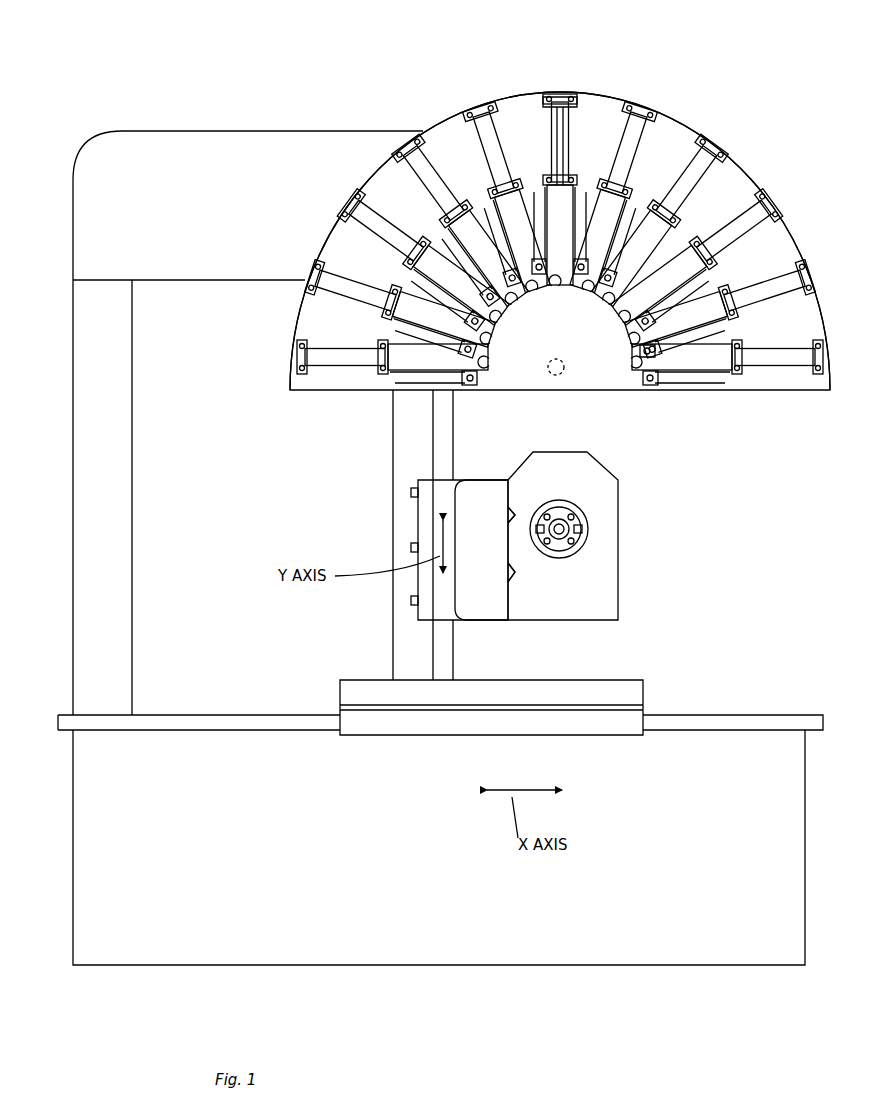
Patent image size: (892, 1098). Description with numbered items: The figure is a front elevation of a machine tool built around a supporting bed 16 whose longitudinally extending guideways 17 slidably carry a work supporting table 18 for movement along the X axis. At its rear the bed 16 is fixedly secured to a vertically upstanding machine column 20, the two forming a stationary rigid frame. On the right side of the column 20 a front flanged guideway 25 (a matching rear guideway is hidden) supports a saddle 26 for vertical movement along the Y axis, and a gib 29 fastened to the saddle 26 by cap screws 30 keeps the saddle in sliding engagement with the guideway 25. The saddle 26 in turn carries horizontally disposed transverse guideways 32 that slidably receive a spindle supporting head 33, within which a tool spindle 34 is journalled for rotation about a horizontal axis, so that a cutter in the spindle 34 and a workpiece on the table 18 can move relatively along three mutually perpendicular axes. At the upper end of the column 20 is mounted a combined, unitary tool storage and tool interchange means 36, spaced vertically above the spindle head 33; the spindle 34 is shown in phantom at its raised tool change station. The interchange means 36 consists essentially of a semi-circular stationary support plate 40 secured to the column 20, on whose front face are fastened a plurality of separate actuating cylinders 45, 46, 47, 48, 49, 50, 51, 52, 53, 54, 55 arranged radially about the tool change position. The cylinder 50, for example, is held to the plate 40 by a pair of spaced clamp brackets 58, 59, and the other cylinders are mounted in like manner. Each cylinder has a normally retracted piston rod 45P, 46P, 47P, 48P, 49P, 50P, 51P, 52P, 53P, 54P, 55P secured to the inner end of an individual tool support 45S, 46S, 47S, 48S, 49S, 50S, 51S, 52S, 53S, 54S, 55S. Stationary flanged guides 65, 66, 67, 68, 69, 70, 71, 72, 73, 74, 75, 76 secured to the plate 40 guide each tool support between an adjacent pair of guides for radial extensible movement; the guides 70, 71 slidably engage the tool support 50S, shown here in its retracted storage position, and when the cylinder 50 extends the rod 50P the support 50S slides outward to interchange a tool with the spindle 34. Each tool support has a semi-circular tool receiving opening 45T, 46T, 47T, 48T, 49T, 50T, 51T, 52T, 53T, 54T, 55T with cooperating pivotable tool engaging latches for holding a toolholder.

The bed 16 is at (178, 968).
The guideways 17 is at (212, 733).
The work supporting table 18 is at (405, 737).
The machine column 20 is at (245, 441).
The front flanged guideway 25 is at (458, 662).
The saddle 26 is at (476, 480).
The gib 29 is at (436, 478).
The cap screws 30 is at (408, 547).
The transverse guideways 32 is at (504, 517).
The spindle supporting head 33 is at (605, 610).
The tool spindle 34 is at (558, 558).
The combined tool storage and tool interchange means 36 is at (462, 95).
The support plate 40 is at (612, 110).
The actuating cylinder 45 is at (332, 361).
The actuating cylinder 46 is at (352, 285).
The actuating cylinder 47 is at (380, 225).
The actuating cylinder 48 is at (424, 166).
The actuating cylinder 49 is at (488, 135).
The actuating cylinder 50 is at (556, 126).
The actuating cylinder 51 is at (630, 146).
The actuating cylinder 52 is at (690, 189).
The actuating cylinder 53 is at (738, 239).
The actuating cylinder 54 is at (782, 292).
The actuating cylinder 55 is at (793, 360).
The piston rod 45P is at (385, 378).
The piston rod 46P is at (388, 320).
The piston rod 47P is at (420, 258).
The piston rod 48P is at (444, 214).
The piston rod 49P is at (493, 197).
The piston rod 50P is at (548, 184).
The piston rod 51P is at (598, 194).
The piston rod 52P is at (678, 226).
The piston rod 53P is at (710, 270).
The piston rod 54P is at (736, 320).
The piston rod 55P is at (740, 378).
The tool support 45S is at (428, 361).
The tool support 46S is at (430, 324).
The tool support 47S is at (440, 276).
The tool support 48S is at (462, 244).
The tool support 49S is at (520, 216).
The tool support 50S is at (575, 200).
The tool support 51S is at (622, 212).
The tool support 52S is at (660, 240).
The tool support 53S is at (680, 272).
The tool support 54S is at (718, 298).
The tool support 55S is at (723, 360).
The tool receiving opening 45T is at (486, 372).
The tool receiving opening 46T is at (498, 352).
The tool receiving opening 47T is at (500, 326).
The tool receiving opening 48T is at (514, 310).
The tool receiving opening 49T is at (534, 300).
The tool holder 50T is at (559, 298).
The tool receiving opening 51T is at (584, 300).
The tool receiving opening 52T is at (600, 320).
The tool receiving opening 53T is at (615, 331).
The tool receiving opening 54T is at (632, 353).
The tool receiving opening 55T is at (640, 372).
The clamp bracket 58 is at (566, 101).
The clamp bracket 59 is at (567, 168).
The flanged guide 65 is at (463, 380).
The flanged guide 66 is at (464, 346).
The flanged guide 67 is at (472, 300).
The flanged guide 68 is at (488, 290).
The flanged guide 69 is at (512, 256).
The flanged guide 70 is at (543, 265).
The flanged guide 71 is at (577, 265).
The flanged guide 72 is at (630, 262).
The flanged guide 73 is at (680, 280).
The flanged guide 74 is at (690, 300).
The flanged guide 75 is at (658, 352).
The flanged guide 76 is at (660, 378).